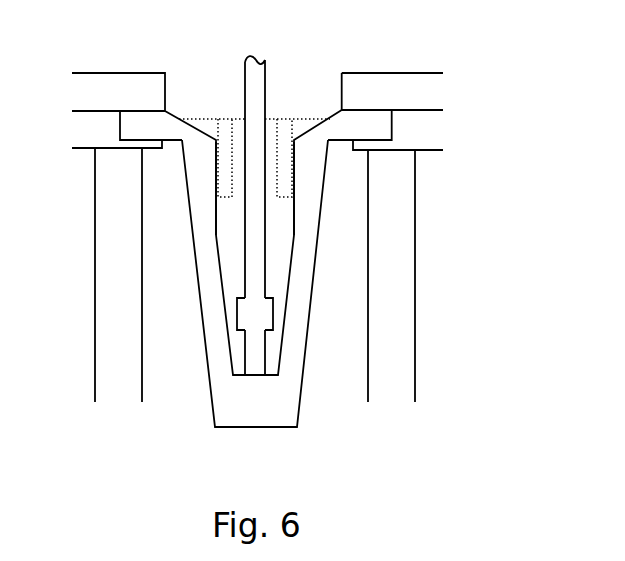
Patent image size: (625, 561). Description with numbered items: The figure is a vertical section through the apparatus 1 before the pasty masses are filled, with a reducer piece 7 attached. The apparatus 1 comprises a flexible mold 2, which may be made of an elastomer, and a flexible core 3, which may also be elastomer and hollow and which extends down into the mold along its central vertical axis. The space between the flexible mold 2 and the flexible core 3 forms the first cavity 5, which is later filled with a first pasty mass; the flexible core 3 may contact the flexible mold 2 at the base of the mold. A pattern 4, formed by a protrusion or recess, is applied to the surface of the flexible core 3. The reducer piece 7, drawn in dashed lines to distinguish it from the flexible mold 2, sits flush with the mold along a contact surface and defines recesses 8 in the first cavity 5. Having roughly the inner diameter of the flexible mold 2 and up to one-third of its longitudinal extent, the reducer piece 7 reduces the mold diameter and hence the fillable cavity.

The apparatus 1 is at (297, 217).
The flexible mold 2 is at (223, 388).
The flexible core 3 is at (266, 260).
The pattern 4 is at (273, 313).
The first cavity 5 is at (277, 222).
The reducer piece 7 is at (283, 187).
The recesses 8 is at (283, 160).